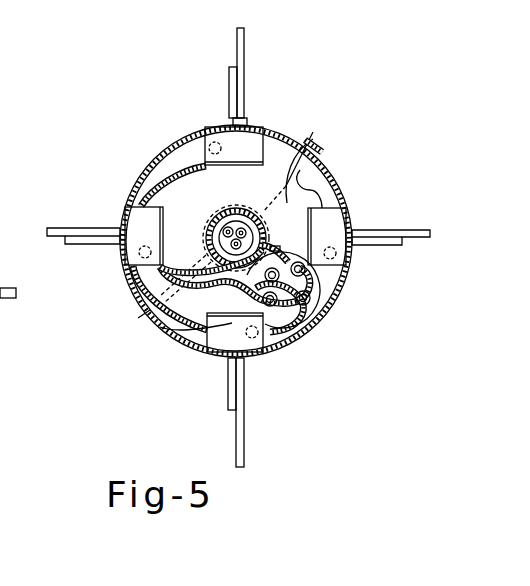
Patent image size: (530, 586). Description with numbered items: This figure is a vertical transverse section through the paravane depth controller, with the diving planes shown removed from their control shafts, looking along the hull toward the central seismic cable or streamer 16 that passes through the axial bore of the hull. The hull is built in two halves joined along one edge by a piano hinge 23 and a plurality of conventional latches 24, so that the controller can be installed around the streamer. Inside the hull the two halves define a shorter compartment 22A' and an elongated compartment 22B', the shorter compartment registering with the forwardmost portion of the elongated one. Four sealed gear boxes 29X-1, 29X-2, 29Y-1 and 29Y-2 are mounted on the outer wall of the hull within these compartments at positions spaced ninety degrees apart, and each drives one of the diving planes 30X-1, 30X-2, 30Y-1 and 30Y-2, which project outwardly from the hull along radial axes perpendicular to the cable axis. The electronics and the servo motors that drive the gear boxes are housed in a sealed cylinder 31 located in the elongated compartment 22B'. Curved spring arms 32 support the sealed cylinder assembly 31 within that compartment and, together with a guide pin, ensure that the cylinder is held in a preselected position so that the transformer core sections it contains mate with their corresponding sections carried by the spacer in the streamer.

The seismic cable or streamer 16 is at (212, 222).
The shorter compartment 22A' is at (237, 194).
The elongated compartment 22B' is at (323, 155).
The piano hinge 23 is at (147, 322).
The latch 24 is at (314, 166).
The sealed gear box 29Y-2 is at (216, 134).
The sealed gear box 29X-2 is at (136, 220).
The sealed gear box 29X-1 is at (338, 230).
The sealed gear box 29Y-1 is at (220, 345).
The diving plane 30Y-2 is at (245, 48).
The diving plane 30Y-1 is at (236, 438).
The diving plane 30X-2 is at (81, 228).
The diving plane 30X-1 is at (430, 238).
The sealed cylinder 31 is at (305, 312).
The curved spring arms 32 is at (312, 176).